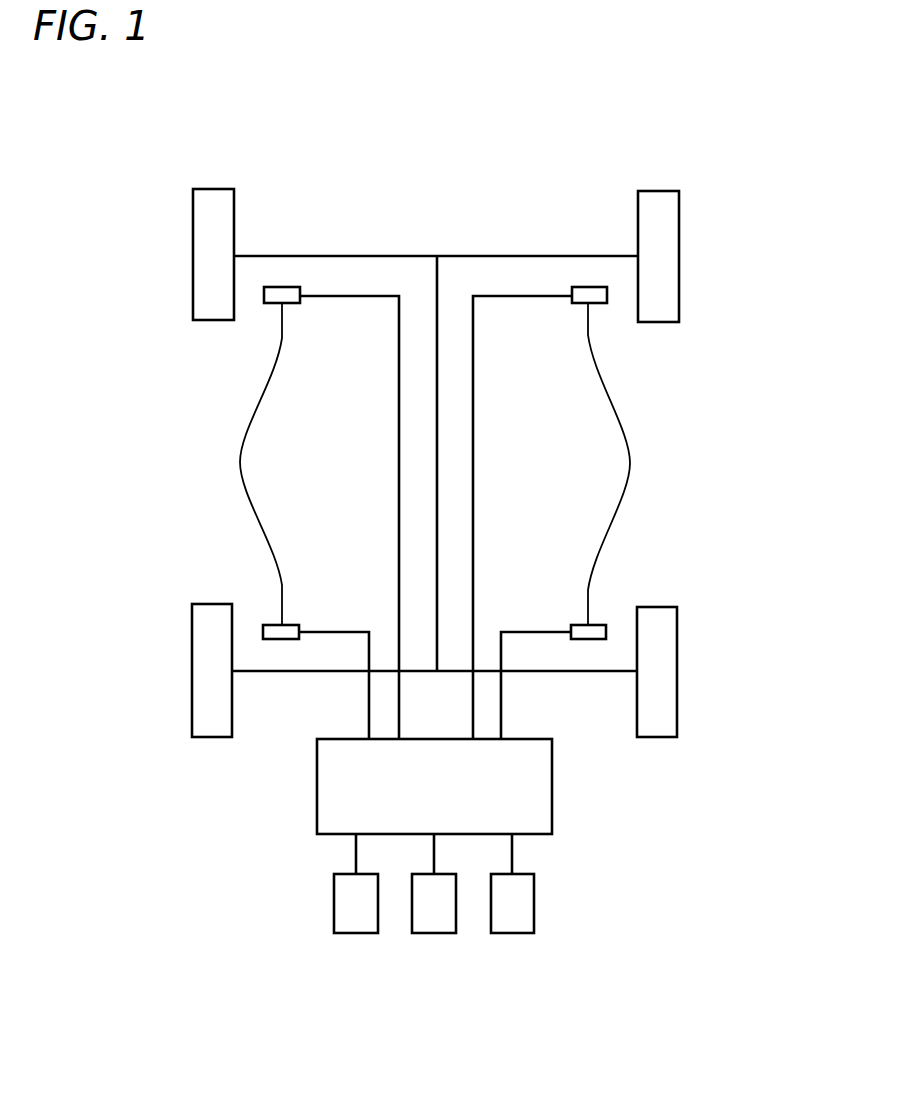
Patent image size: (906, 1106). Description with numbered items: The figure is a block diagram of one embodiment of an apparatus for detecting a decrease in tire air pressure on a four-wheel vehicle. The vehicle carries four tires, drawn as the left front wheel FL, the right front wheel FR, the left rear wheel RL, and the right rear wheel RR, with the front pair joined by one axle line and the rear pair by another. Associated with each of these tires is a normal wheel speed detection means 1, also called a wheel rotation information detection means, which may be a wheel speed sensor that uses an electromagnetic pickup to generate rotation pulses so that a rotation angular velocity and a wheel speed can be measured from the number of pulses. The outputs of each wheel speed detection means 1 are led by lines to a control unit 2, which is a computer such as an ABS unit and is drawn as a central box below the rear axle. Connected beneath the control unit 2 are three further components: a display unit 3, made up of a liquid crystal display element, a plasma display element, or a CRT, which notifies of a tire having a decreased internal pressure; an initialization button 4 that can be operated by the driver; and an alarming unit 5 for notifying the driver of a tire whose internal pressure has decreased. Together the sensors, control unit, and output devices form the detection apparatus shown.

The wheel speed detection means 1 is at (300, 513).
The control unit 2 is at (553, 790).
The display unit 3 is at (356, 933).
The initialization button 4 is at (434, 933).
The alarming unit 5 is at (512, 933).
The left front wheel FL is at (193, 237).
The right front wheel FR is at (679, 239).
The left rear wheel RL is at (192, 652).
The right rear wheel RR is at (677, 652).